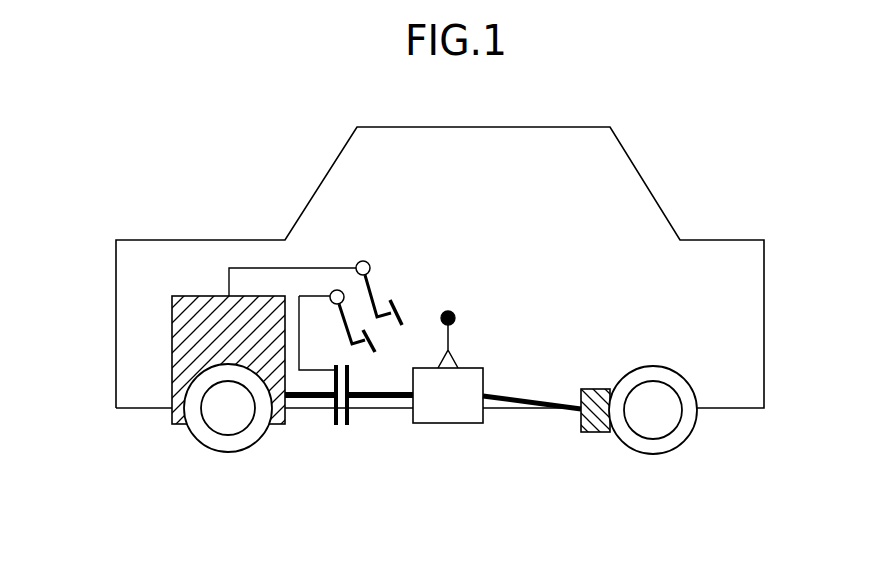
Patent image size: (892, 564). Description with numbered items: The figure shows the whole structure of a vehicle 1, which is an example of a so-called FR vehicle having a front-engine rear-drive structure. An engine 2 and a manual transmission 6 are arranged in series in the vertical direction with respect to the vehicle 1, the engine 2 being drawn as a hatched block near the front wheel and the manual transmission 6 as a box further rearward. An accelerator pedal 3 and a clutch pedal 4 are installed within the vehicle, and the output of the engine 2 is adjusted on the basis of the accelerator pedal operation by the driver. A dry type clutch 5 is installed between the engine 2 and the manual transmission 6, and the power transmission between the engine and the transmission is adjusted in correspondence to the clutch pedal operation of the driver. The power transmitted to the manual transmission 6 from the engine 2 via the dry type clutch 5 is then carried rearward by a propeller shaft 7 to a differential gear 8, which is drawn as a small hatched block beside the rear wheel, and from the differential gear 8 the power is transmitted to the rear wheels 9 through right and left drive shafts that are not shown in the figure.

The vehicle 1 is at (642, 182).
The engine 2 is at (190, 297).
The accelerator pedal 3 is at (368, 282).
The clutch pedal 4 is at (378, 345).
The dry type clutch 5 is at (341, 432).
The manual transmission 6 is at (448, 425).
The propeller shaft 7 is at (520, 398).
The differential gear 8 is at (595, 432).
The rear wheels 9 is at (650, 365).